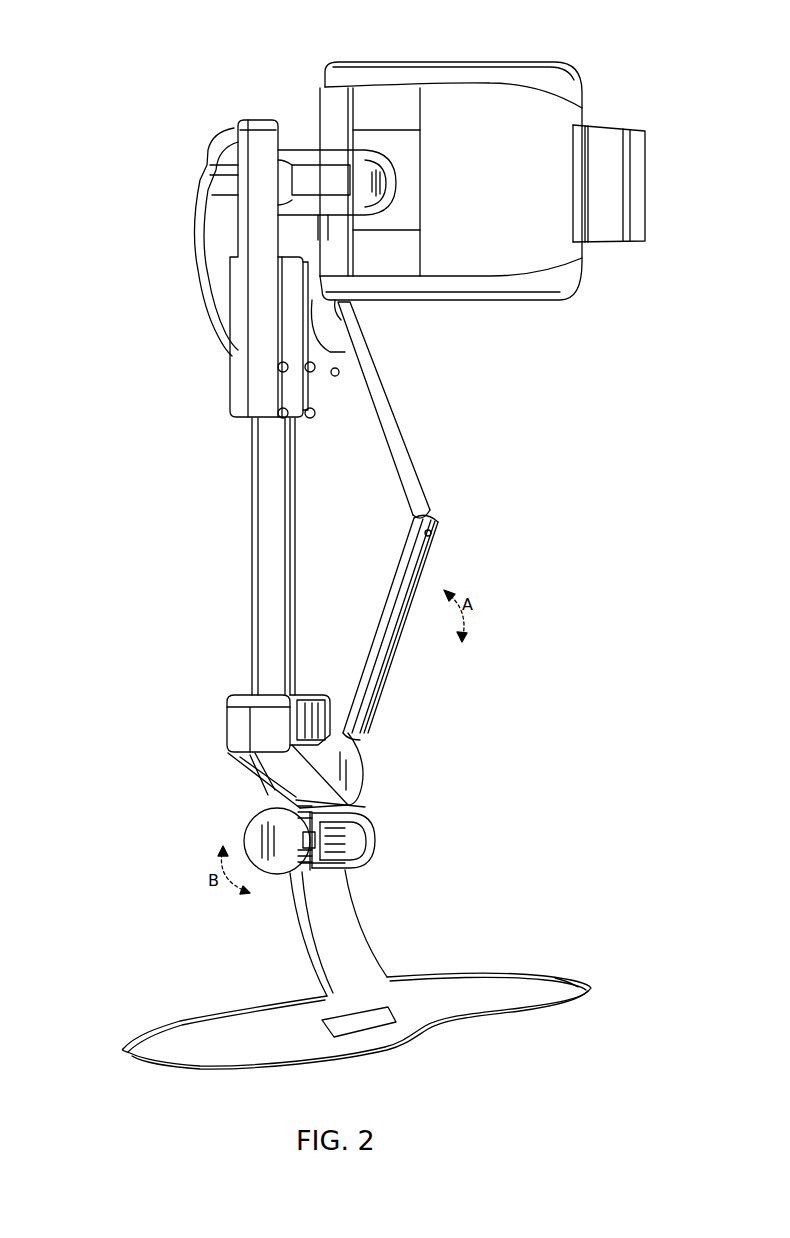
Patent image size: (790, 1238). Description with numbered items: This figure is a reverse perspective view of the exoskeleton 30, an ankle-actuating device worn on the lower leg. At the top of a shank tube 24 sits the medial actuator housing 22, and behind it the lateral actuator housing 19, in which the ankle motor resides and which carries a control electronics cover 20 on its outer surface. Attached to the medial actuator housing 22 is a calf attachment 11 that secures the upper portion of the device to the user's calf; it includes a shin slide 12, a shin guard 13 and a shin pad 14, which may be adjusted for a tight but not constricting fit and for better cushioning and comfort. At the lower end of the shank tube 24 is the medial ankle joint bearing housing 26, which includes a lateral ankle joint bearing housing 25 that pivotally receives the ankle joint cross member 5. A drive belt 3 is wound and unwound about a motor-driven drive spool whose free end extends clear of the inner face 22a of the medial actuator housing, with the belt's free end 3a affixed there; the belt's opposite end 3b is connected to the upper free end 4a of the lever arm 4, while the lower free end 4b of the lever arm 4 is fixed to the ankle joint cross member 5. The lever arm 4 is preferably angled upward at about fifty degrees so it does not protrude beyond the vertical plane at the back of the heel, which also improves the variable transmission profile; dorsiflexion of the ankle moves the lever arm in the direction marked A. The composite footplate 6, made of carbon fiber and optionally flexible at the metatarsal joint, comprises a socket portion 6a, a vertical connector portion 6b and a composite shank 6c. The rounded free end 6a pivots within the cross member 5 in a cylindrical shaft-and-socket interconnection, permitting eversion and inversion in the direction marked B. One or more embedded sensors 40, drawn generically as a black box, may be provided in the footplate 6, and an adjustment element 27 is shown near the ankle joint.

The drive belt 3 is at (410, 441).
The free end of drive belt 3a is at (345, 310).
The lower end of first link 3b is at (427, 512).
The lever arm 4 is at (396, 665).
The upper free end of lever arm 4a is at (432, 531).
The lower free end of lever arm 4b is at (360, 738).
The ankle joint cross member 5 is at (368, 816).
The composite footplate 6 is at (430, 1033).
The socket portion 6a is at (350, 836).
The vertical connector portion 6b is at (352, 941).
The composite shank 6c is at (553, 986).
The calf attachment 11 is at (640, 200).
The shin slide 12 is at (368, 140).
The shin guard 13 is at (578, 121).
The shin pad 14 is at (525, 75).
The lateral actuator housing 19 is at (222, 297).
The control electronics cover 20 is at (205, 255).
The medial actuator housing 22 is at (262, 120).
The inner face of medial actuator housing 22a is at (330, 325).
The shank tube 24 is at (258, 490).
The lateral ankle joint bearing housing 25 is at (236, 727).
The medial ankle joint bearing housing 26 is at (352, 771).
The adjustment knob 27 is at (260, 826).
The exoskeleton 30 is at (192, 595).
The embedded sensors 40 is at (348, 1024).